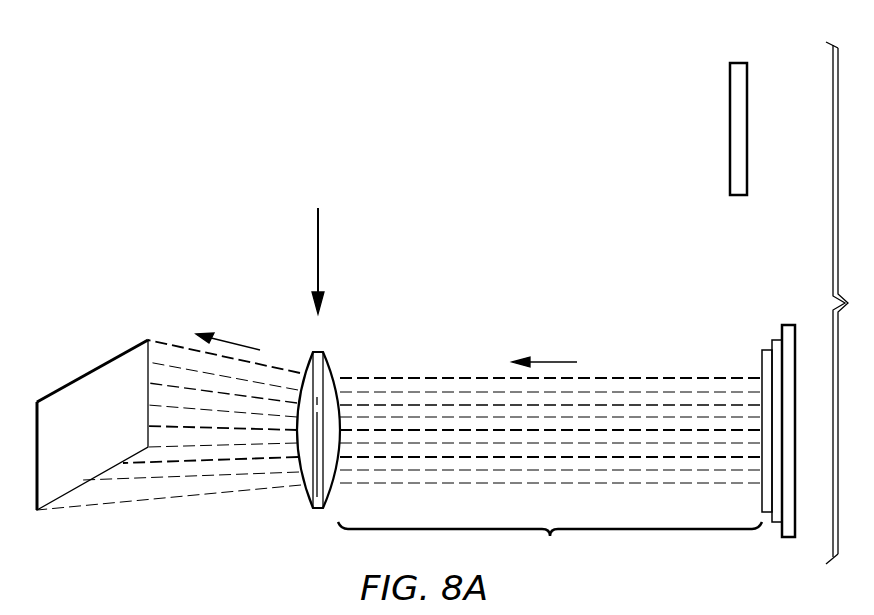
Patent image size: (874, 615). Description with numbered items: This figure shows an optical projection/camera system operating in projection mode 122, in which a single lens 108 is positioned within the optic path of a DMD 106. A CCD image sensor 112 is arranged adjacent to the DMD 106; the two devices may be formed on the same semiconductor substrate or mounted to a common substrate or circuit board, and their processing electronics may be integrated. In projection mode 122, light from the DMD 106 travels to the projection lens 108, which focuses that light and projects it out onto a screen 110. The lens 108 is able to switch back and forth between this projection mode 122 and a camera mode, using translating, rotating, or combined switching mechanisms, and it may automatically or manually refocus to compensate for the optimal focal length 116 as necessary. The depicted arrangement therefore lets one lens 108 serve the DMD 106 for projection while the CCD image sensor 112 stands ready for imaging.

The DMD 106 is at (790, 322).
The lens 108 is at (318, 512).
The screen 110 is at (92, 372).
The CCD image sensor 112 is at (748, 98).
The focal length 116 is at (550, 544).
The projection mode 122 is at (324, 72).